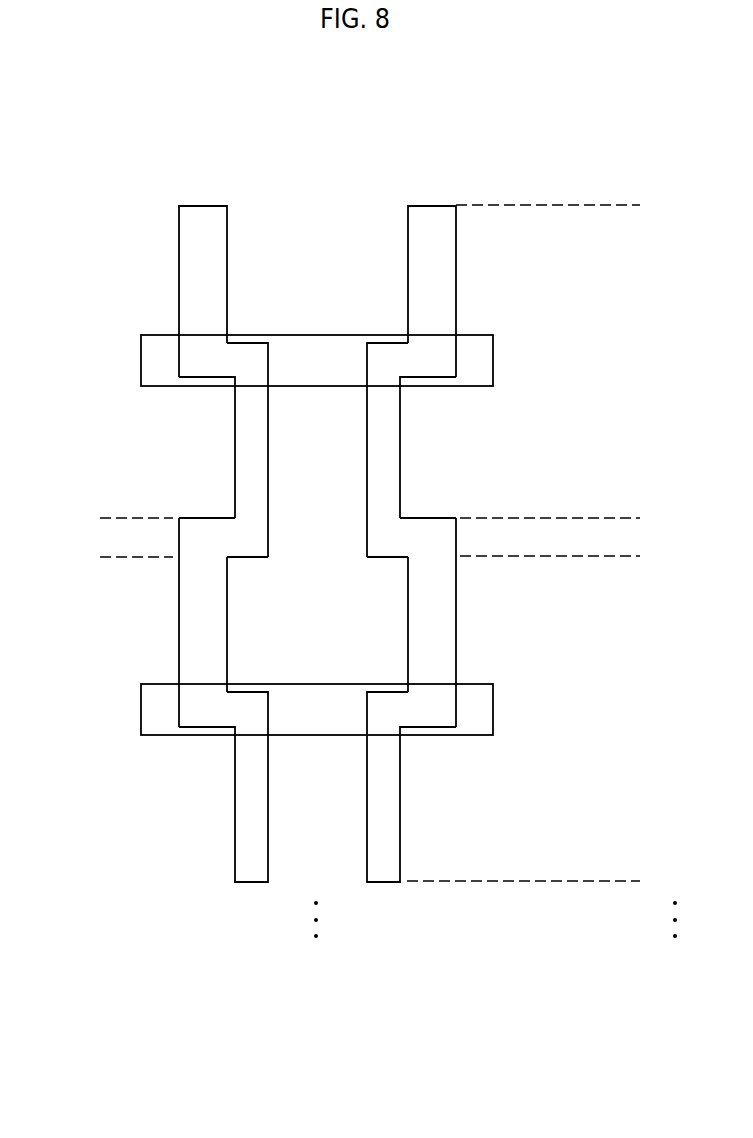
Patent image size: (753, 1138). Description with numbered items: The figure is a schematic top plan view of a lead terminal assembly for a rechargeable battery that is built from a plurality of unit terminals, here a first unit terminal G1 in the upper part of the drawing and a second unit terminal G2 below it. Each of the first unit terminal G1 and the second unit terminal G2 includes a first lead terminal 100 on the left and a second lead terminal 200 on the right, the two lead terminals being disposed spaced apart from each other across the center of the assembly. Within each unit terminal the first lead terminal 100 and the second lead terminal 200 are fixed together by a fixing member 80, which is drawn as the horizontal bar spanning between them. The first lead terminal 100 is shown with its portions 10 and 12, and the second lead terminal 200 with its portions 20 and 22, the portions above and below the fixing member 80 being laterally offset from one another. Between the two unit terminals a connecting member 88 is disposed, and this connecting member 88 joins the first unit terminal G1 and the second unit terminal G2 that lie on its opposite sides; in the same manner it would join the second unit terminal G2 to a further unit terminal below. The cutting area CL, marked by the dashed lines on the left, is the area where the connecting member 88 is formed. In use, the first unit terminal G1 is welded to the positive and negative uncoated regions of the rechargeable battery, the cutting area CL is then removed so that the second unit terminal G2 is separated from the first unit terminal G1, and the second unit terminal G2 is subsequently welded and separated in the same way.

The first body portion 10 is at (187, 312).
The first extension portion 12 is at (243, 427).
The second body portion 20 is at (440, 318).
The second extension portion 22 is at (387, 432).
The fixing member 80 is at (316, 387).
The connecting member 88 is at (187, 540).
The first lead terminal 100 is at (77, 302).
The second lead terminal 200 is at (552, 311).
The first unit terminal G1 is at (646, 518).
The second unit terminal G2 is at (646, 556).
The cutting area CL is at (96, 518).